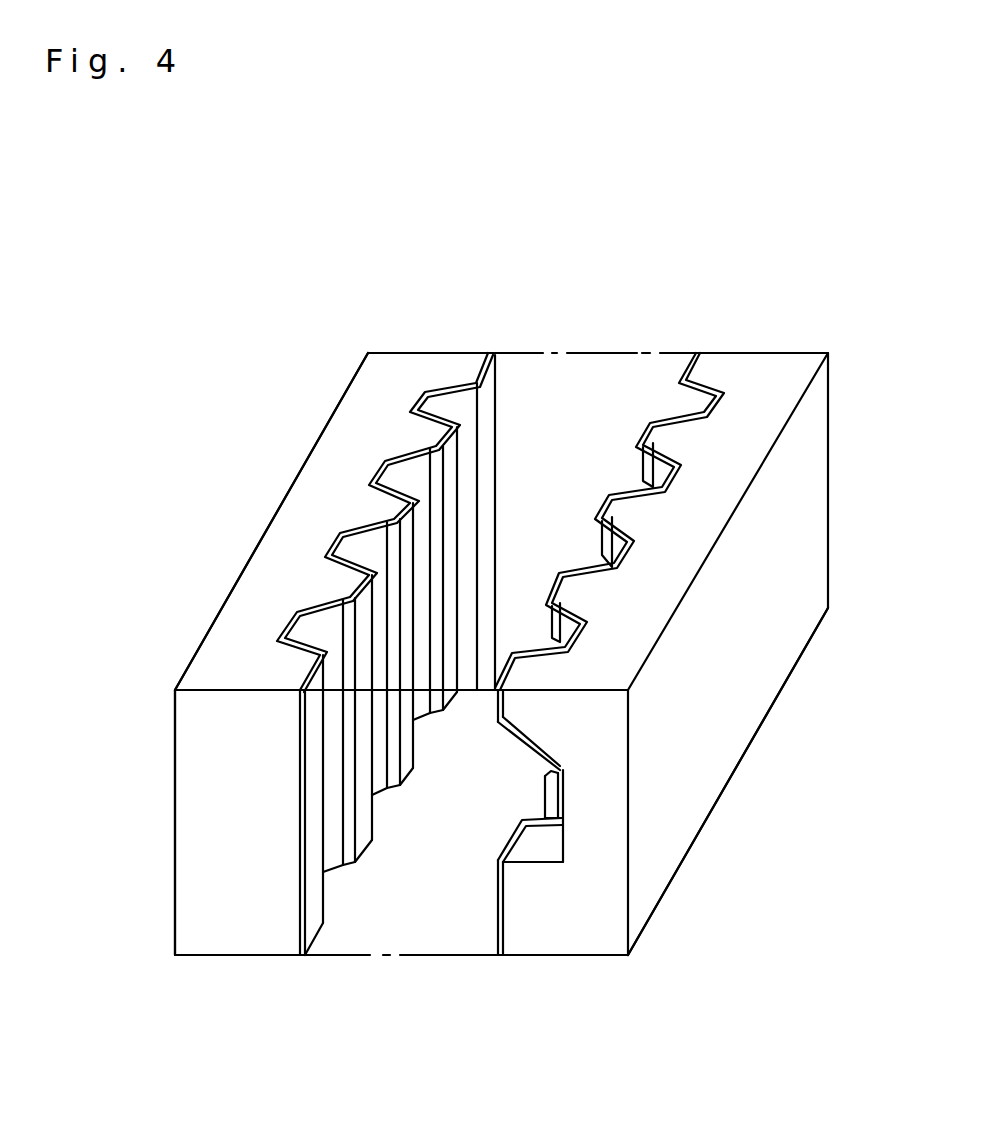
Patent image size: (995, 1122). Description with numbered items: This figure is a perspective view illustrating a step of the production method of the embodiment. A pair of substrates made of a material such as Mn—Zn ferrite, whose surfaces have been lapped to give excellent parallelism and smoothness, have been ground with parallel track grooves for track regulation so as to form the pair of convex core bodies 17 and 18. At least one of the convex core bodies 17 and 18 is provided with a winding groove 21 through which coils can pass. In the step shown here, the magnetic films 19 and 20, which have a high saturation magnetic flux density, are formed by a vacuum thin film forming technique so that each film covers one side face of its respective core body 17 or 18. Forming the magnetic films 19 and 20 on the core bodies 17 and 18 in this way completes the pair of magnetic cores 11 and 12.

The magnetic core 11 is at (828, 455).
The magnetic core 12 is at (285, 498).
The convex core body 17 is at (700, 808).
The convex core body 18 is at (195, 737).
The magnetic film 19 is at (684, 376).
The magnetic film 20 is at (510, 358).
The winding groove 21 is at (563, 840).